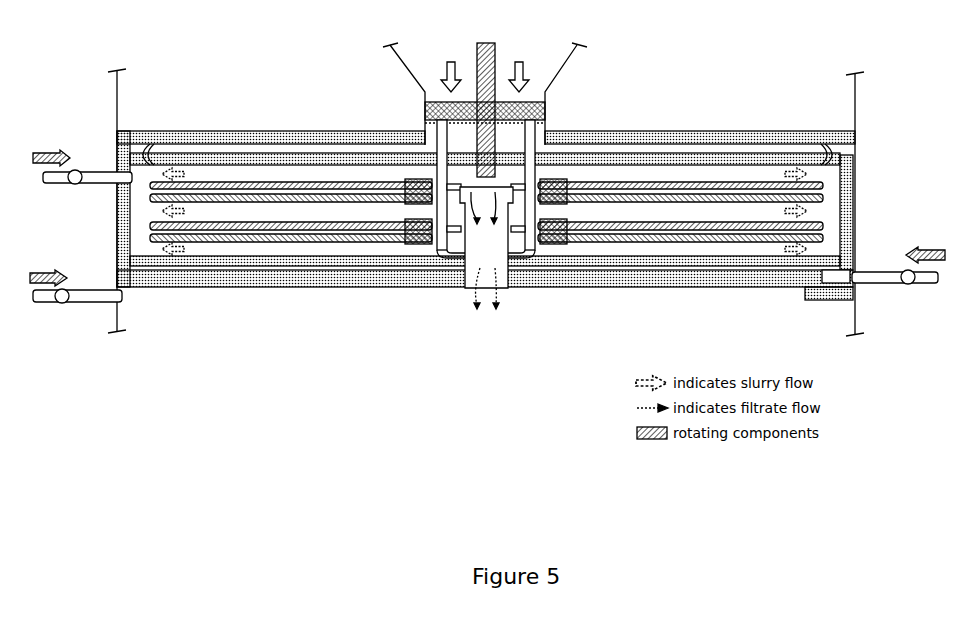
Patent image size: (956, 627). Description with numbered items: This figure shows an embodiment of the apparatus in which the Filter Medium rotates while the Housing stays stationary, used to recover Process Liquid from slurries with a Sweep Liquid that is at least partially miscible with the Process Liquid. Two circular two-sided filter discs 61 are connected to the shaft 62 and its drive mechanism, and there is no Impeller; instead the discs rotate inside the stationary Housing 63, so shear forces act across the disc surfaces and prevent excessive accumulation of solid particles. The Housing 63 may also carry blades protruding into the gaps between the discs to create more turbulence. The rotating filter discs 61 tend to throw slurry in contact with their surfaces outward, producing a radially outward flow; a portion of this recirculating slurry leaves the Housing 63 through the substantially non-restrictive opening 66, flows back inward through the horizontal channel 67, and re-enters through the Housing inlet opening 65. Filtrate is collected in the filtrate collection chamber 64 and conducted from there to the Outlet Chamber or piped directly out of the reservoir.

The circular filter discs 61 is at (147, 187).
The shaft 62 is at (477, 55).
The Housing 63 is at (303, 158).
The filtrate collection chamber 64 is at (470, 288).
The Housing inlet opening 65 is at (450, 147).
The non-restrictive opening 66 is at (857, 160).
The horizontal channel 67 is at (715, 143).